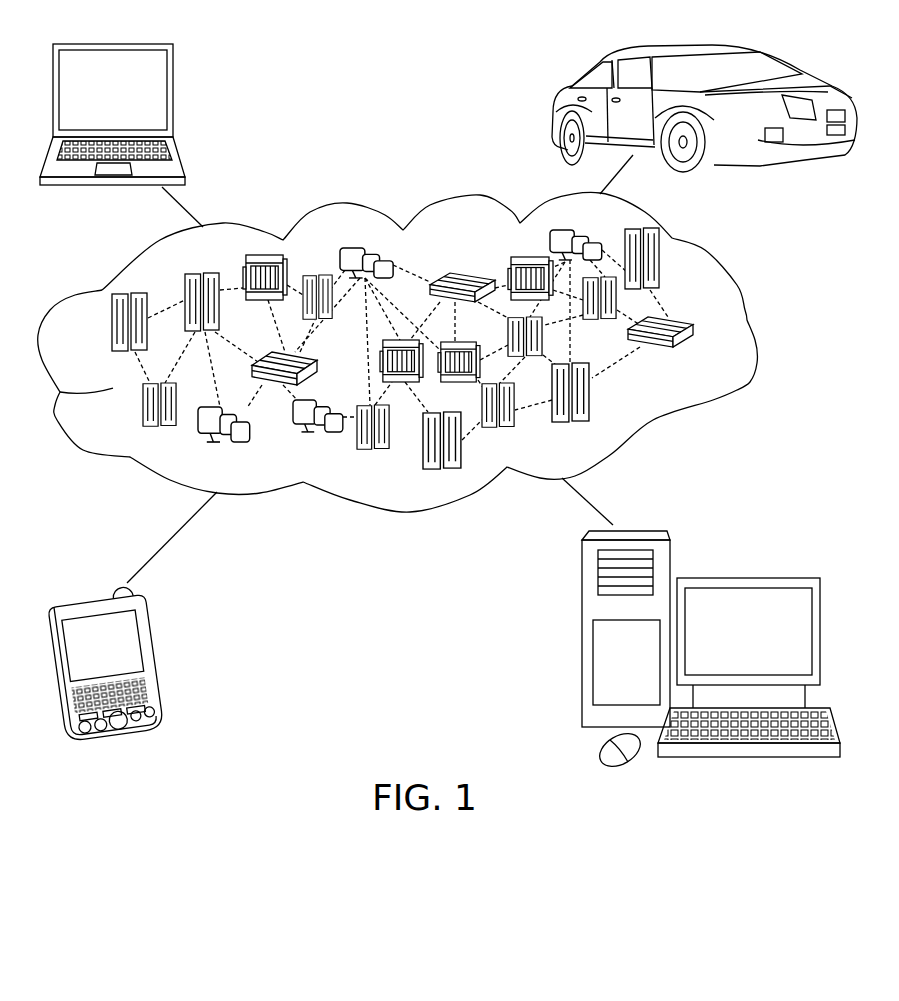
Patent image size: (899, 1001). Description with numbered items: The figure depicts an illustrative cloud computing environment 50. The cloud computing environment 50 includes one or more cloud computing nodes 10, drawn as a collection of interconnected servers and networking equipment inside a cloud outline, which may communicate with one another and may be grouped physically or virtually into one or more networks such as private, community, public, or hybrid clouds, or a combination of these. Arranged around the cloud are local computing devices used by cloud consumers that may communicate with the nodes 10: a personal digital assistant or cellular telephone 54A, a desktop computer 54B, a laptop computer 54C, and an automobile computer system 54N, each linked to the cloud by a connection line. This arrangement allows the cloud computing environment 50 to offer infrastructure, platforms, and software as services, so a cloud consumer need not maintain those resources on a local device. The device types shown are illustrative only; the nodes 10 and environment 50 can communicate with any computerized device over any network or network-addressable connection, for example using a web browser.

The laptop computer 54C is at (175, 97).
The automobile computer system 54N is at (557, 110).
The personal digital assistant (PDA) or cellular telephone 54A is at (167, 656).
The desktop computer 54B is at (749, 578).
The cloud computing environment 50 is at (748, 332).
The cloud computing nodes 10 is at (455, 348).